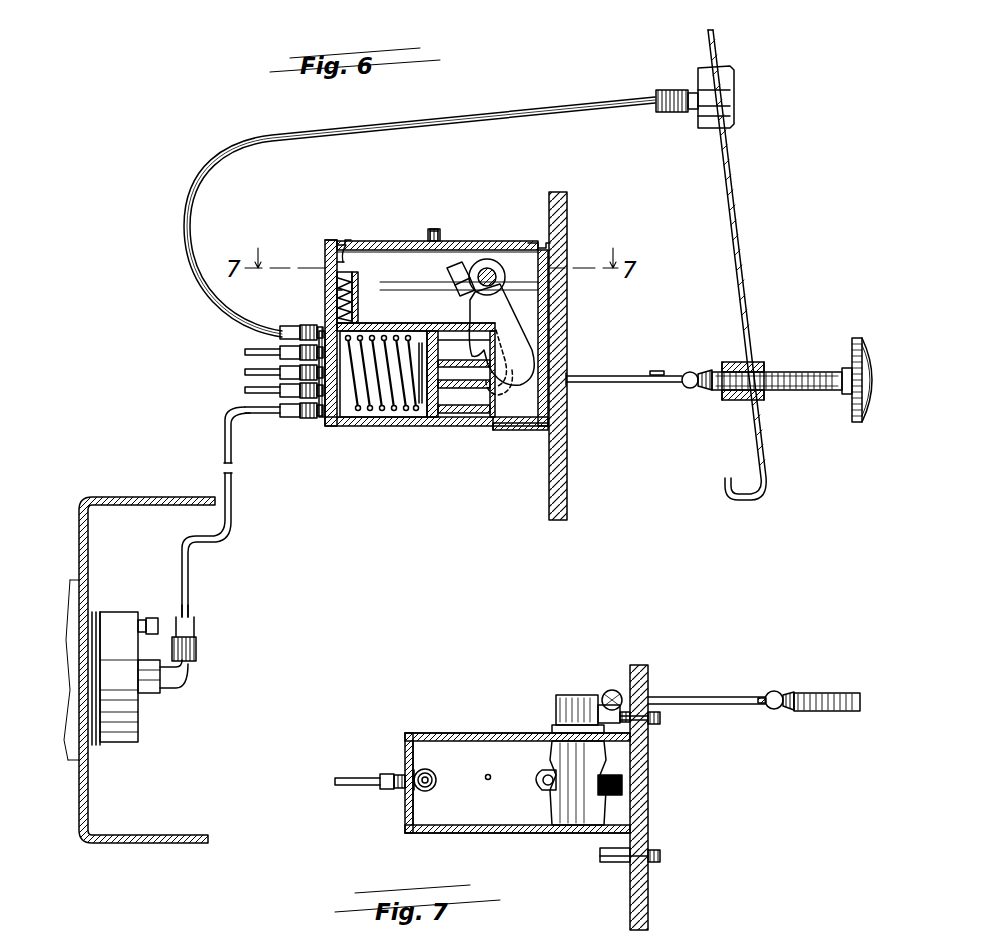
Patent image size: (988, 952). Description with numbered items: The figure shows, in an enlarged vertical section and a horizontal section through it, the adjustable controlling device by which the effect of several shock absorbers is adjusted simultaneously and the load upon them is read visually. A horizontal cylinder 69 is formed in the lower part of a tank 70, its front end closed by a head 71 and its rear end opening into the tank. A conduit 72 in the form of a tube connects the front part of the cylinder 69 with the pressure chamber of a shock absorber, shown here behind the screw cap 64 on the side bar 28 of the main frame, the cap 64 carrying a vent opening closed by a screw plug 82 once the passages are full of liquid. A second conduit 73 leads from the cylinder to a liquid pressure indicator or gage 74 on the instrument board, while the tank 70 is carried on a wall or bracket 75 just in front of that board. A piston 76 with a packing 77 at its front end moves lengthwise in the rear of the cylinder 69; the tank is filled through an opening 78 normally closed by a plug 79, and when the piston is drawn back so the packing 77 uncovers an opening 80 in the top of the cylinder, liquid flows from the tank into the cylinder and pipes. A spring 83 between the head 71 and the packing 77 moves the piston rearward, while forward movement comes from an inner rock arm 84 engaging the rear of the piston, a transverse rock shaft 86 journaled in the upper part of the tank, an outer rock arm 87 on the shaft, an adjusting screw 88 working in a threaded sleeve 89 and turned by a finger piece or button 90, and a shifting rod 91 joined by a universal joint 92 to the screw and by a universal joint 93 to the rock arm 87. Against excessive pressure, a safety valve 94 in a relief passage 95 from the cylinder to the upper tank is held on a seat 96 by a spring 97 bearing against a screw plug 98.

In FIG. 6, the side bar 28 is at (93, 497).
In FIG. 6, the screw cap 64 is at (130, 742).
In FIG. 6, the horizontal cylinder 69 is at (390, 426).
In FIG. 7, the horizontal cylinder 69 is at (487, 741).
In FIG. 6, the tank 70 is at (515, 430).
In FIG. 7, the tank 70 is at (460, 716).
In FIG. 6, the head 71 is at (323, 426).
In FIG. 6, the conduit 72 is at (262, 378).
In FIG. 7, the conduit 72 is at (345, 778).
In FIG. 6, the conduit 73 is at (525, 110).
In FIG. 6, the liquid pressure indicator or gage 74 is at (715, 80).
In FIG. 6, the wall or bracket 75 is at (567, 498).
In FIG. 7, the wall or bracket 75 is at (639, 797).
In FIG. 6, the piston 76 is at (468, 426).
In FIG. 6, the packing 77 is at (433, 426).
In FIG. 6, the opening 78 is at (455, 249).
In FIG. 6, the plug 79 is at (434, 229).
In FIG. 6, the opening 80 is at (416, 315).
In FIG. 7, the opening 80 is at (488, 780).
In FIG. 6, the screw plug 82 is at (152, 618).
In FIG. 6, the spring 83 is at (356, 426).
In FIG. 6, the inner rock arm 84 is at (520, 330).
In FIG. 6, the transverse rock shaft 86 is at (487, 270).
In FIG. 7, the transverse rock shaft 86 is at (556, 700).
In FIG. 6, the outer rock arm 87 is at (515, 352).
In FIG. 7, the outer rock arm 87 is at (600, 705).
In FIG. 6, the adjusting screw 88 is at (798, 362).
In FIG. 7, the adjusting screw 88 is at (830, 712).
In FIG. 6, the threaded socket or sleeve 89 is at (742, 400).
In FIG. 6, the finger piece or button 90 is at (866, 420).
In FIG. 6, the shifting rod 91 is at (615, 383).
In FIG. 7, the shifting rod 91 is at (712, 697).
In FIG. 6, the universal joint 92 is at (686, 388).
In FIG. 7, the universal joint 92 is at (770, 708).
In FIG. 7, the universal joint 93 is at (612, 690).
In FIG. 6, the safety valve 94 is at (344, 320).
In FIG. 6, the relief passage 95 is at (345, 264).
In FIG. 7, the relief passage 95 is at (425, 792).
In FIG. 6, the seat 96 is at (335, 320).
In FIG. 6, the spring 97 is at (333, 292).
In FIG. 6, the screw plug 98 is at (335, 263).
In FIG. 7, the screw plug 98 is at (432, 772).